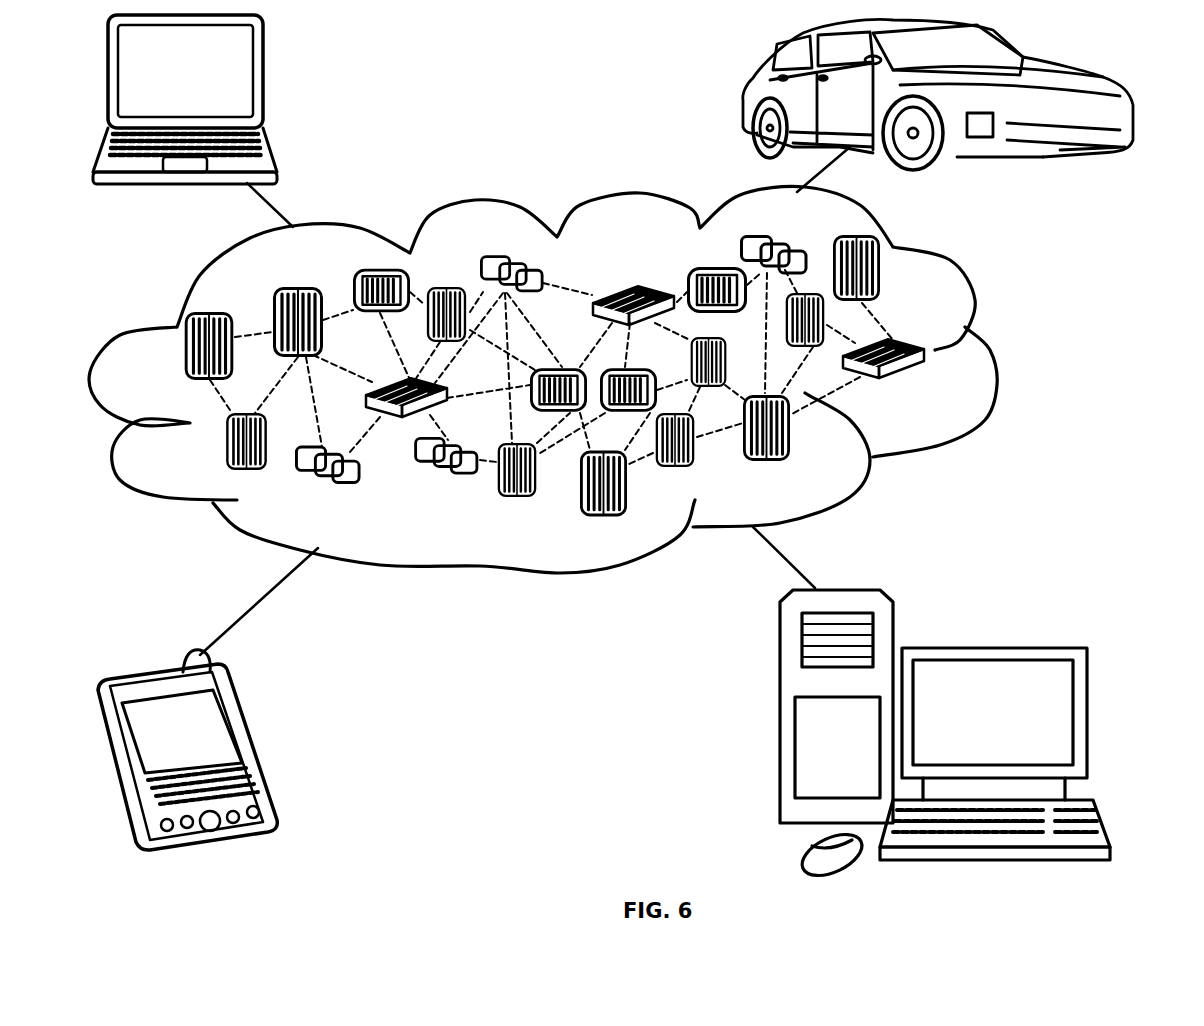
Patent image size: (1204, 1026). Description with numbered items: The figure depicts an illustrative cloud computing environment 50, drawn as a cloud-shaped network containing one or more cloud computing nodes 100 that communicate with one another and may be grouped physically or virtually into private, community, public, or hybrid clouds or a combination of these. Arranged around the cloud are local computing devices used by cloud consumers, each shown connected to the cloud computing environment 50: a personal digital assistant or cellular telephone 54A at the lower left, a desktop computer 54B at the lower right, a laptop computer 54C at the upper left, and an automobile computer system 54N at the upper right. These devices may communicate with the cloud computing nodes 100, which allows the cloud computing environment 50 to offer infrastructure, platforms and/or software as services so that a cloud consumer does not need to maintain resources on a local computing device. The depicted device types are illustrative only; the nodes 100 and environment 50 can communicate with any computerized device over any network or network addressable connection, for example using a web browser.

The cloud computing environment 50 is at (988, 355).
The cloud computing nodes 100 is at (925, 385).
The personal digital assistant or cellular telephone 54A is at (250, 740).
The desktop computer 54B is at (990, 648).
The laptop computer 54C is at (263, 80).
The automobile computer system 54N is at (750, 97).